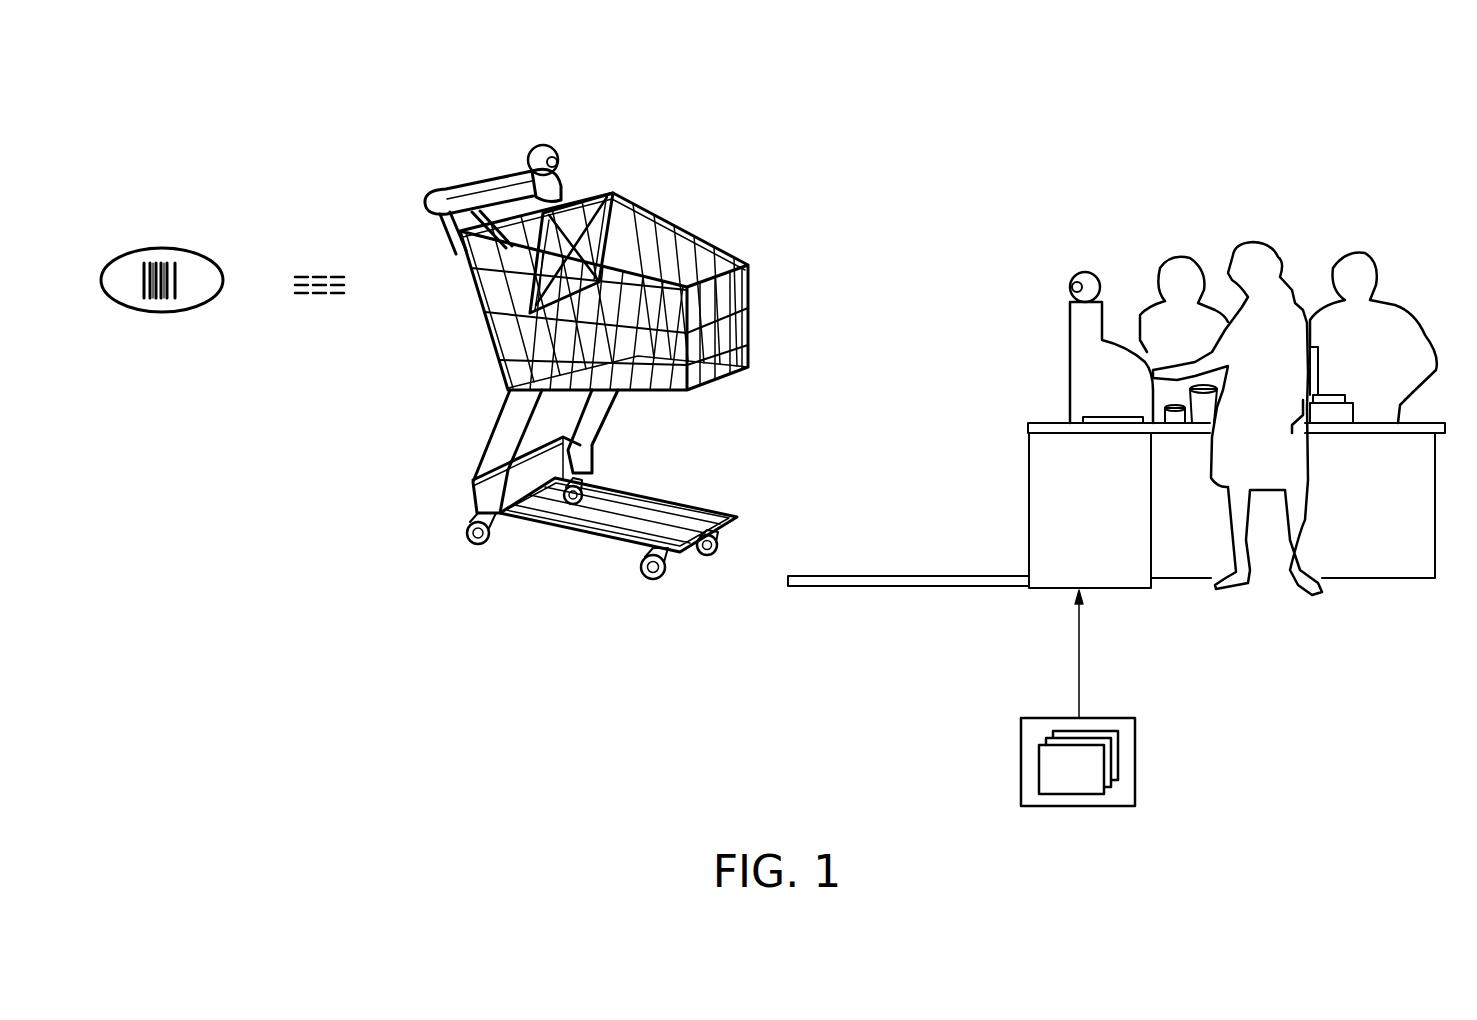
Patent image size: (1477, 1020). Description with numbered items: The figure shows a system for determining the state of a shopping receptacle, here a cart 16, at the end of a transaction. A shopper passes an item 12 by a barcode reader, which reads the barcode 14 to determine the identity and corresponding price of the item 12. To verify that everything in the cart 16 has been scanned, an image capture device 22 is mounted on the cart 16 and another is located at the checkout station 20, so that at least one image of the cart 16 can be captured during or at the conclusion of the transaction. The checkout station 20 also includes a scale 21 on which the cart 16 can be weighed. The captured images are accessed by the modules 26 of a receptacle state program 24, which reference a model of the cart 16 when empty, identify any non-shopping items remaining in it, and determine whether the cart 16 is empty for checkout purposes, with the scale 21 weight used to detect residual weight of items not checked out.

The item 12 is at (160, 248).
The barcode 14 is at (160, 312).
The cart 16 is at (458, 190).
The checkout station 20 is at (1198, 176).
The scale 21 is at (885, 576).
The image capture device 22 is at (548, 145).
The receptacle state program 24 is at (1137, 729).
The modules 26 is at (1118, 766).